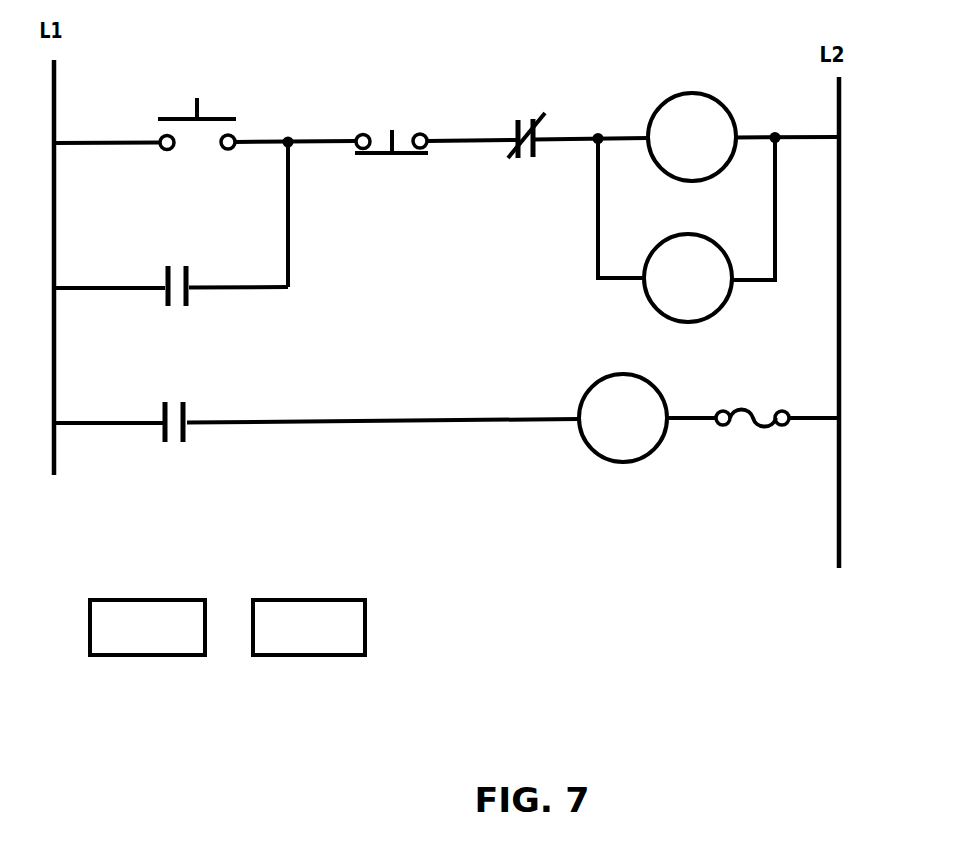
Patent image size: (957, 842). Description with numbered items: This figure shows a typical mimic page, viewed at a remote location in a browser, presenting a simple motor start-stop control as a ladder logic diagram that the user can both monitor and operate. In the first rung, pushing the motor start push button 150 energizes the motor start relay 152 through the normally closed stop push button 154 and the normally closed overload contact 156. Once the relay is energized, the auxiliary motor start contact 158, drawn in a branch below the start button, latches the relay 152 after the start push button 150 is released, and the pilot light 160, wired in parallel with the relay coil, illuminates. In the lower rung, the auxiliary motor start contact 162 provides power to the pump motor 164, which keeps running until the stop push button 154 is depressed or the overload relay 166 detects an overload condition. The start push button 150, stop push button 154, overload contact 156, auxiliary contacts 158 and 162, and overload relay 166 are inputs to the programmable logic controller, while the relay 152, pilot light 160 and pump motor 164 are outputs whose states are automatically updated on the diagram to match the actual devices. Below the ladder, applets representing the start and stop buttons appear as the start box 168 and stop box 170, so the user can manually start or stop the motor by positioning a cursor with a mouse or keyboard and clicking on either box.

The motor start push button 150 is at (248, 122).
The motor start relay 152 is at (668, 112).
The stop push button 154 is at (392, 170).
The overload contact 156 is at (532, 165).
The auxiliary motor start contact 158 is at (202, 297).
The pilot light 160 is at (657, 288).
The auxiliary motor start contact 162 is at (195, 428).
The pump motor 164 is at (620, 445).
The overload relay 166 is at (740, 428).
The start box 168 is at (117, 648).
The stop box 170 is at (285, 647).